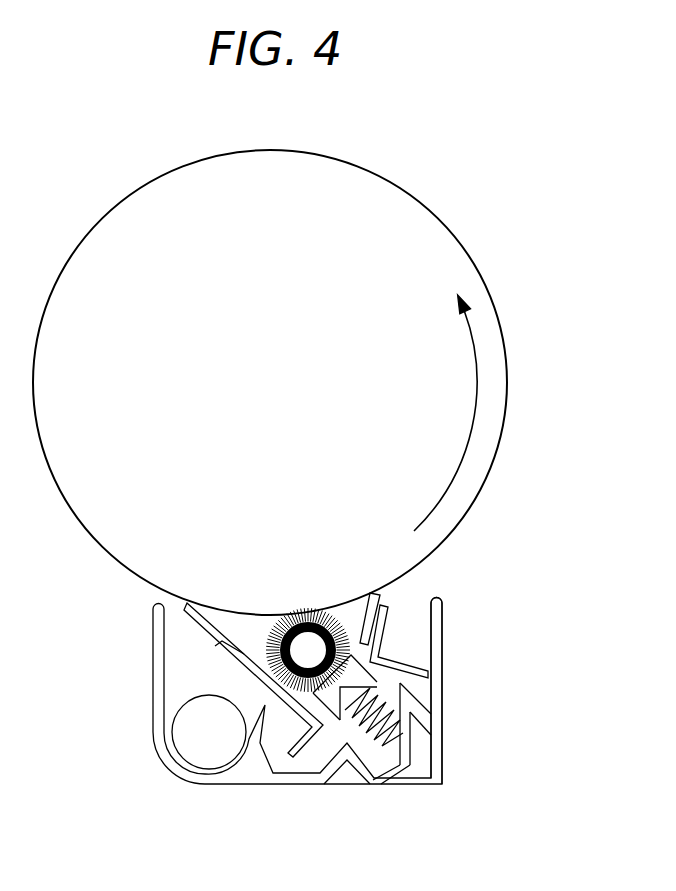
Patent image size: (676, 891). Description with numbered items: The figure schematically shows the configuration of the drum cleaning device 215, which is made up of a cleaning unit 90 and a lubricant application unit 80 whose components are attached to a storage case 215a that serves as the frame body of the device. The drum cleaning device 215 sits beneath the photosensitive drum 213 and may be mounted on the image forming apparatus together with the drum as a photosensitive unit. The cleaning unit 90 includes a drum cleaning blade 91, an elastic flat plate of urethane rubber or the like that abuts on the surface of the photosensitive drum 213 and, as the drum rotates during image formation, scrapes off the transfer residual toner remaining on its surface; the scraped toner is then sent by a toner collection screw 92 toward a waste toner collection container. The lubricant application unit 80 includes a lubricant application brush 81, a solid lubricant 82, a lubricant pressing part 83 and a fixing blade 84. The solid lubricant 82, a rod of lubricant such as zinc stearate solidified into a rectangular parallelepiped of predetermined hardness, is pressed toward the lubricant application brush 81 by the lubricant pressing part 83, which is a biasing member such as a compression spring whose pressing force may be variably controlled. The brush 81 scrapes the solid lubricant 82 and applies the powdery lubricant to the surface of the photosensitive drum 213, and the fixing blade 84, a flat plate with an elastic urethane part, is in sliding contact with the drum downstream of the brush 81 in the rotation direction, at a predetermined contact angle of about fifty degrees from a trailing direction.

The photosensitive drum 213 is at (508, 381).
The drum cleaning device 215 is at (226, 812).
The storage case 215a is at (442, 630).
The cleaning unit 90 is at (178, 688).
The drum cleaning blade 91 is at (200, 628).
The toner collection screw 92 is at (175, 733).
The lubricant application brush 81 is at (303, 608).
The lubricant application unit 80 is at (329, 752).
The lubricant pressing part 83 is at (381, 738).
The solid lubricant 82 is at (376, 668).
The fixing blade 84 is at (376, 596).